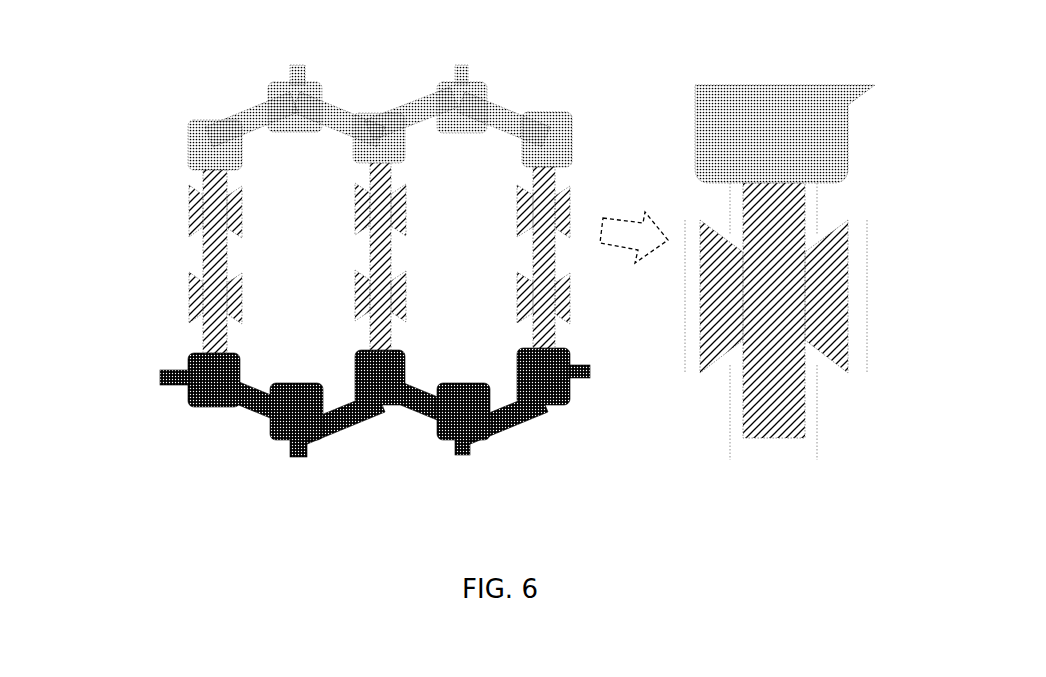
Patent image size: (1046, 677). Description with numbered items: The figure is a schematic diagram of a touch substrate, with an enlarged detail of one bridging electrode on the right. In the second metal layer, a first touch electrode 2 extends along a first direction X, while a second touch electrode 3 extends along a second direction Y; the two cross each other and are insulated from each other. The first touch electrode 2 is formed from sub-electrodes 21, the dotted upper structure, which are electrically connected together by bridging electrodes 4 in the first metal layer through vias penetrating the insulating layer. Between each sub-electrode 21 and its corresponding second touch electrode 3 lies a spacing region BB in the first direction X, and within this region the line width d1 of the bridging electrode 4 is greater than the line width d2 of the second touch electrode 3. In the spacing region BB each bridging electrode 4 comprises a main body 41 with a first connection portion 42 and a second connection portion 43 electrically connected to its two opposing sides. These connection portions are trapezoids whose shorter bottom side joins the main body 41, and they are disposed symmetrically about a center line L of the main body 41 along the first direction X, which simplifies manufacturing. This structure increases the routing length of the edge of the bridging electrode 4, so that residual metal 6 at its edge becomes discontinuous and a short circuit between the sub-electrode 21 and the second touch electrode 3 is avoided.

The first touch electrode 2 is at (565, 118).
The sub-electrode 21 is at (313, 83).
The second touch electrode 3 is at (298, 460).
The bridging electrode 4 is at (346, 258).
The main body 41 is at (206, 257).
The first connection portion 42 is at (197, 300).
The second connection portion 43 is at (242, 297).
The residual metal 6 is at (812, 256).
The line width of bridging electrode d1 is at (566, 218).
The line width of second touch electrode d2 is at (510, 125).
The spacing region BB is at (190, 352).
The center line L is at (775, 500).
The first direction X is at (73, 538).
The second direction Y is at (73, 538).